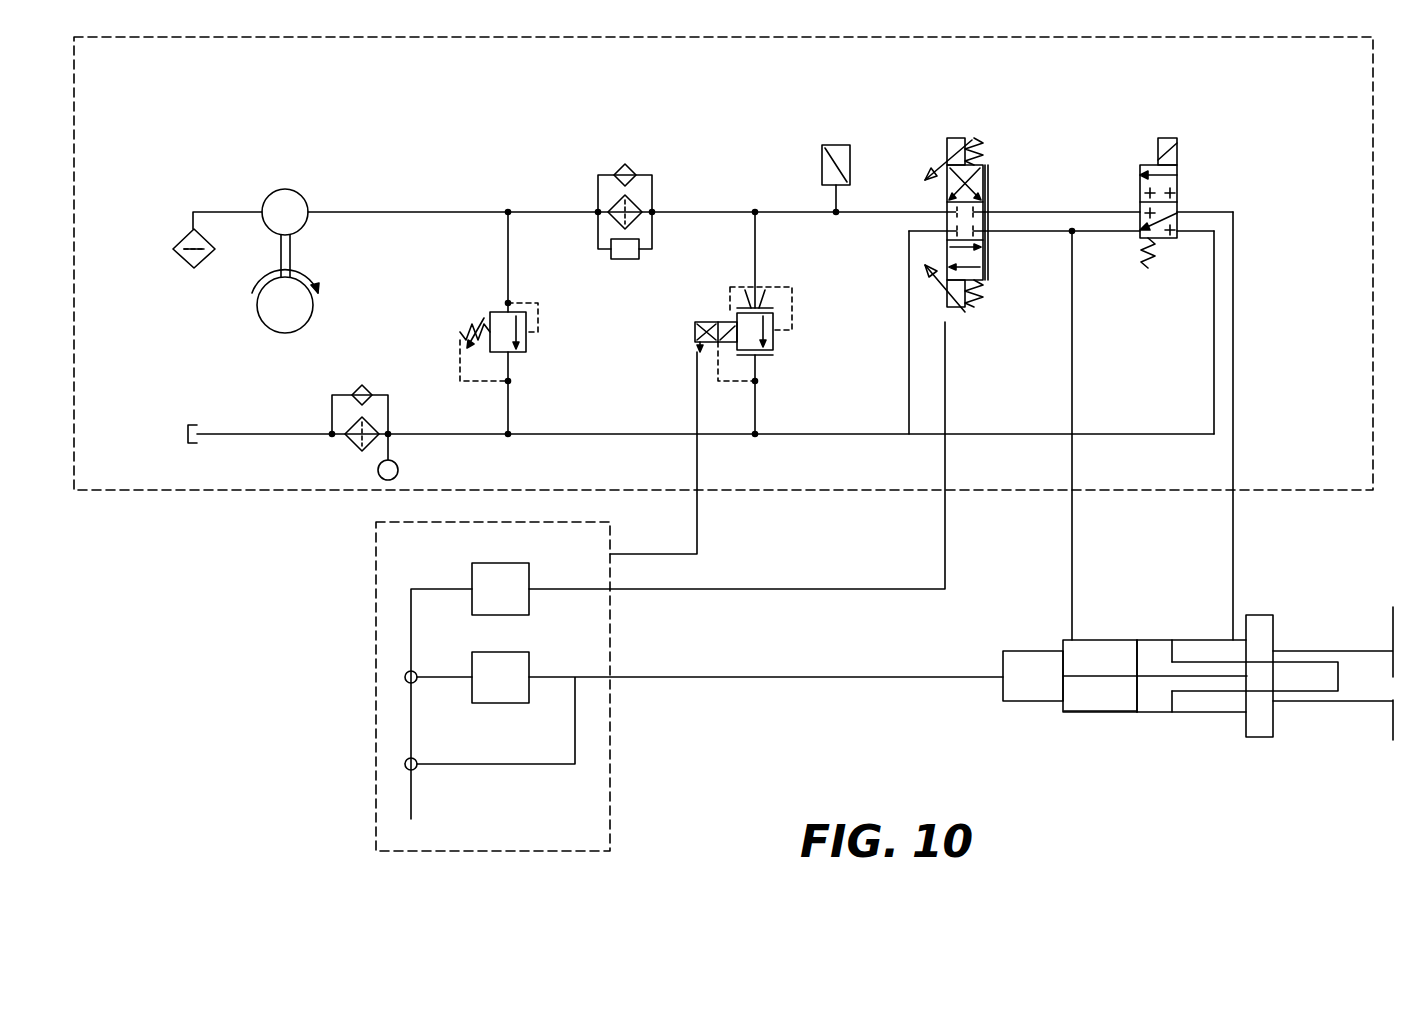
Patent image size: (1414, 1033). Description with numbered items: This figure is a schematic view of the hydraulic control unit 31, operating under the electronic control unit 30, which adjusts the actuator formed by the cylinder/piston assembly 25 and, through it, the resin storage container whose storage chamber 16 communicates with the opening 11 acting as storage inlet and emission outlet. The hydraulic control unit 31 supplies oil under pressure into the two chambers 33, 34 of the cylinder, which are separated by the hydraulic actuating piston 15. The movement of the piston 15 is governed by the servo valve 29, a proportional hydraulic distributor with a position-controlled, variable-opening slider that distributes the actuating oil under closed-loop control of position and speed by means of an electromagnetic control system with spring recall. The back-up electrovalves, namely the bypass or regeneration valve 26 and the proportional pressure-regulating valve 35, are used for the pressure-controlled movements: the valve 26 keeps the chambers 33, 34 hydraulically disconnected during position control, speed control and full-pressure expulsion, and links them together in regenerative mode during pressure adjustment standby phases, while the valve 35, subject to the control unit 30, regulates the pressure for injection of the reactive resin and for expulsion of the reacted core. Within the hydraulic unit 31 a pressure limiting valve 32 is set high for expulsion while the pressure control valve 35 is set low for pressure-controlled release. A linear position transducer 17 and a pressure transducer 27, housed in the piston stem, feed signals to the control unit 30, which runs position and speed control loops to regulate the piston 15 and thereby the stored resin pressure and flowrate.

The opening 11 is at (1393, 668).
The hydraulic actuating piston 15 is at (1155, 688).
The chamber 16 is at (1367, 686).
The linear position transducer 17 is at (1110, 674).
The cylinder/piston assembly 25 is at (1064, 645).
The bypass or regeneration valve 26 is at (1186, 177).
The pressure transducer 27 is at (1040, 688).
The servo valve 29 is at (993, 177).
The programmable electronic control unit 30 is at (365, 774).
The hydraulic control unit 31 is at (307, 493).
The pressure relief valve 32 is at (480, 304).
The chamber 33 is at (1100, 690).
The chamber 34 is at (1205, 703).
The proportional pressure-regulating valve 35 is at (786, 348).